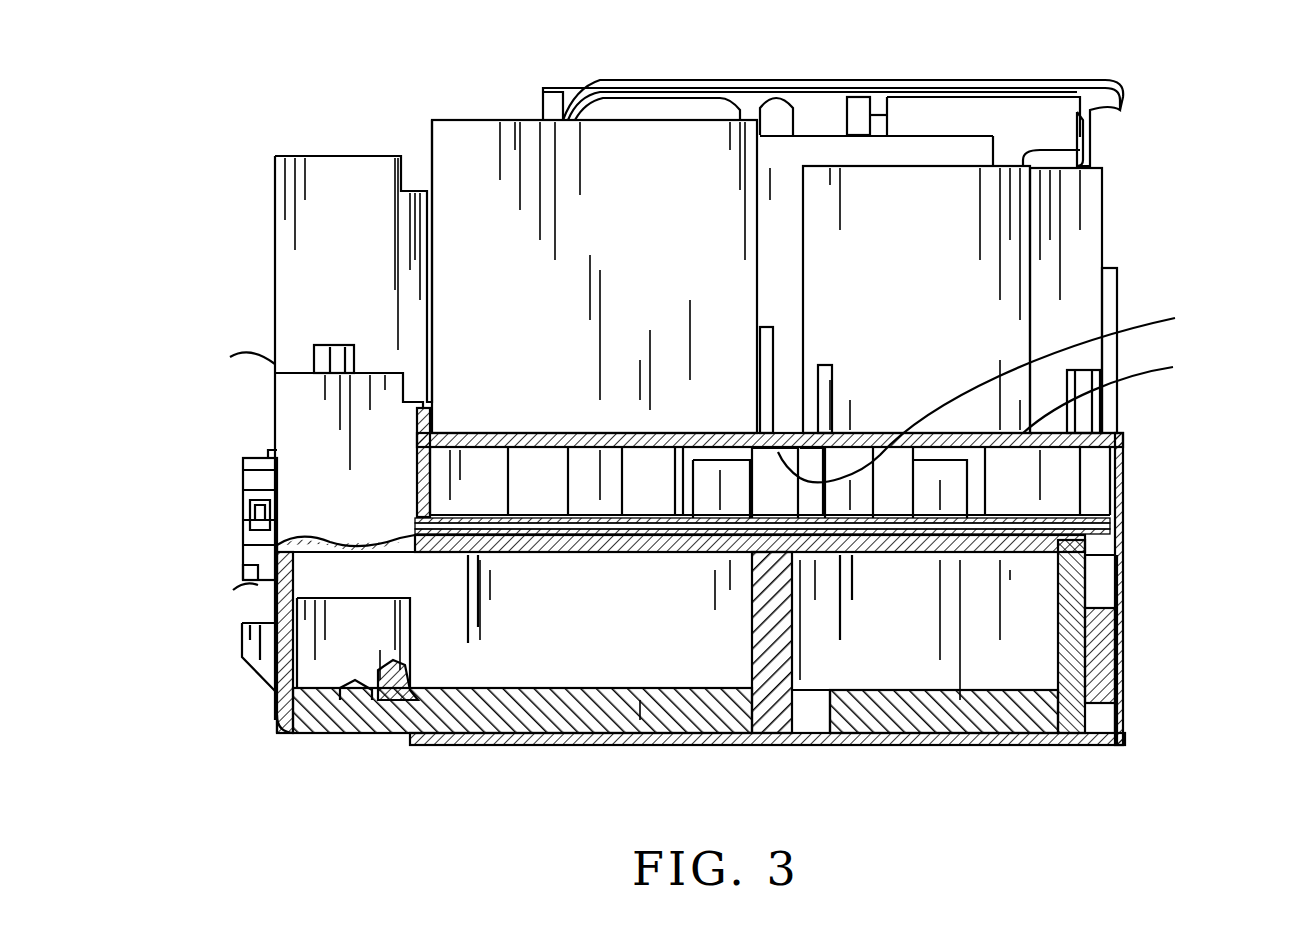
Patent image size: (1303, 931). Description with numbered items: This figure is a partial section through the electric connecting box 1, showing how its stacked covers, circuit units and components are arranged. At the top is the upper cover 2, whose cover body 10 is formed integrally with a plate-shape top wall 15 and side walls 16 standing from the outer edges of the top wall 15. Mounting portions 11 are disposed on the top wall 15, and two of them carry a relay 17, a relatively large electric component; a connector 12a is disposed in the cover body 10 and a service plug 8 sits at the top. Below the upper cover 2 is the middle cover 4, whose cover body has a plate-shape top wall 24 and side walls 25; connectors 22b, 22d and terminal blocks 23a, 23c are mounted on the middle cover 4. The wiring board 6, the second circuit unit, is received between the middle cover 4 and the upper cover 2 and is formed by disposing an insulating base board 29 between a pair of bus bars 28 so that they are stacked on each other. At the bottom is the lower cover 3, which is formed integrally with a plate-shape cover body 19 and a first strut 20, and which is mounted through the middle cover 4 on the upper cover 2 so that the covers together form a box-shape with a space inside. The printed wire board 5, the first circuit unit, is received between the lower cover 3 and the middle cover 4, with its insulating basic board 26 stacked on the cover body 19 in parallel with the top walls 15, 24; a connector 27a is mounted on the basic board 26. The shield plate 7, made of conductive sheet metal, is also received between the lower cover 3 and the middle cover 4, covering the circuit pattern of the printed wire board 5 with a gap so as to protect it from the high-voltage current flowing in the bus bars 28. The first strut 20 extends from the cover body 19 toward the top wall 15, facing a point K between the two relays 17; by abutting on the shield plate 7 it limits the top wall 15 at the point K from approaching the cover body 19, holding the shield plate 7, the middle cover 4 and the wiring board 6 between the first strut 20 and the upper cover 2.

The electric connecting box 1 is at (1144, 178).
The upper cover 2 is at (1135, 470).
The lower cover 3 is at (955, 750).
The middle cover 4 is at (1092, 588).
The printed wire board 5 is at (601, 688).
The wiring board 6 is at (1213, 478).
The shield plate 7 is at (505, 558).
The service plug 8 is at (915, 82).
The cover body 10 is at (1120, 433).
The mounting portions 11 is at (636, 433).
The connector 12a is at (1108, 285).
The top wall 15 is at (1120, 386).
The side walls 16 is at (1125, 600).
The relay 17 is at (680, 150).
The cover body 19 is at (865, 745).
The first strut 20 is at (772, 650).
The connector 22b is at (265, 526).
The connector 22d is at (262, 578).
The terminal block 23a is at (336, 155).
The terminal block 23c is at (314, 352).
The top wall 24 is at (850, 553).
The side walls 25 is at (1093, 648).
The basic board 26 is at (556, 705).
The connector 27a is at (332, 665).
The bus bars 28 is at (1110, 522).
The insulating base board 29 is at (1110, 528).
The point K is at (989, 391).